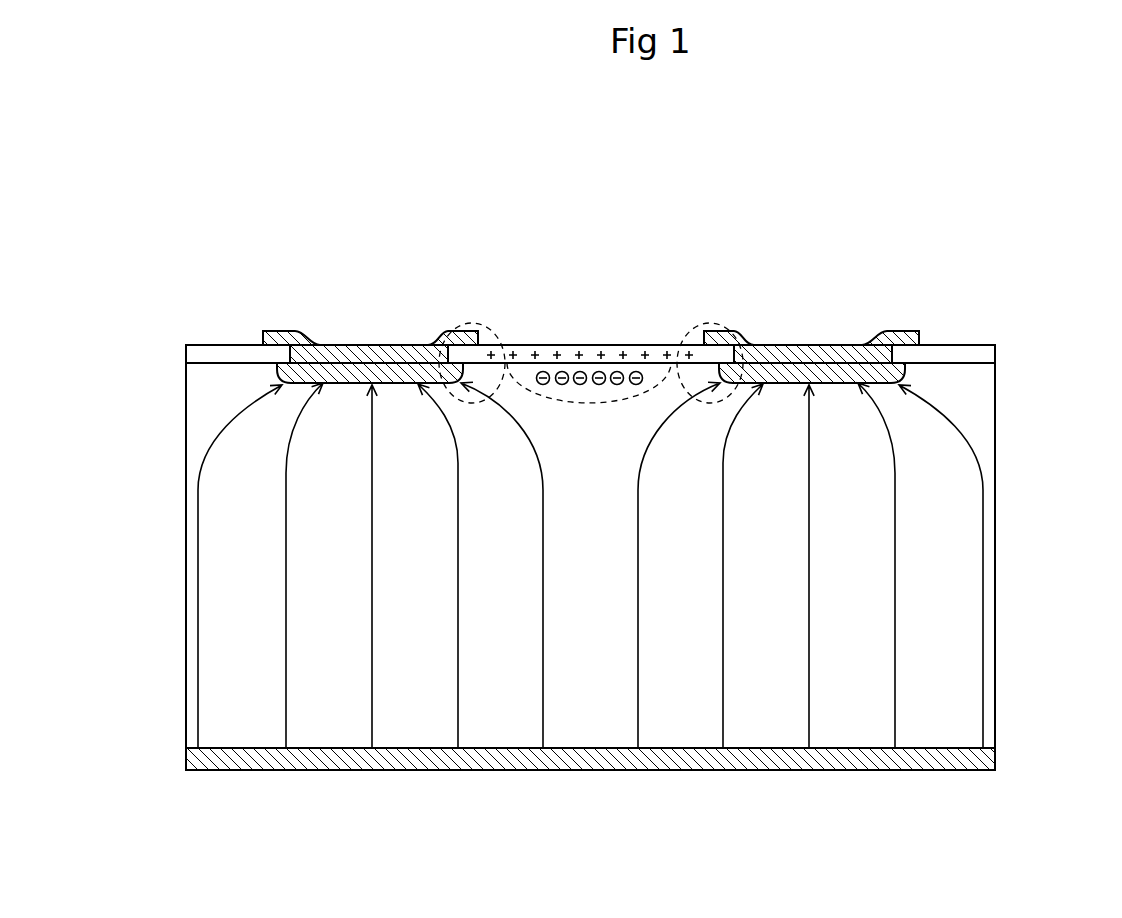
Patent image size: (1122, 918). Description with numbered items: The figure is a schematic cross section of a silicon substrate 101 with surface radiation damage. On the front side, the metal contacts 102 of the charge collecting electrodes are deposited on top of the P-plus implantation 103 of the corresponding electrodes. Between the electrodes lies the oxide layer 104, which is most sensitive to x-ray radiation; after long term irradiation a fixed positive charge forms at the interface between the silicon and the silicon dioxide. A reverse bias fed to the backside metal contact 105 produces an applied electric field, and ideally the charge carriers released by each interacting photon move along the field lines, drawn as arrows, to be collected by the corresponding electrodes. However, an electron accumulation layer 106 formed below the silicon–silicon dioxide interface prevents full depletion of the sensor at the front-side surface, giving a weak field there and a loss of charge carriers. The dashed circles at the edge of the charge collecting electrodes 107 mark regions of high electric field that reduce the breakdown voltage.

The silicon substrate 101 is at (995, 605).
The metal contacts 102 is at (373, 345).
The P-plus implantation 103 is at (348, 373).
The oxide layer 104 is at (613, 352).
The backside metal contact 105 is at (565, 760).
The electron accumulation layer 106 is at (580, 396).
The edge of charge collecting electrodes 107 is at (708, 323).